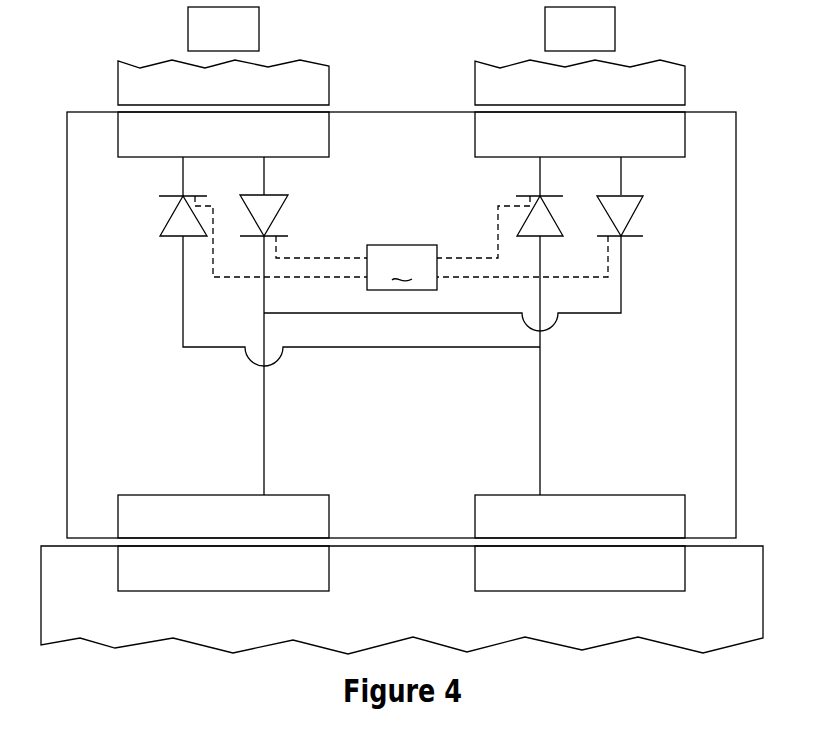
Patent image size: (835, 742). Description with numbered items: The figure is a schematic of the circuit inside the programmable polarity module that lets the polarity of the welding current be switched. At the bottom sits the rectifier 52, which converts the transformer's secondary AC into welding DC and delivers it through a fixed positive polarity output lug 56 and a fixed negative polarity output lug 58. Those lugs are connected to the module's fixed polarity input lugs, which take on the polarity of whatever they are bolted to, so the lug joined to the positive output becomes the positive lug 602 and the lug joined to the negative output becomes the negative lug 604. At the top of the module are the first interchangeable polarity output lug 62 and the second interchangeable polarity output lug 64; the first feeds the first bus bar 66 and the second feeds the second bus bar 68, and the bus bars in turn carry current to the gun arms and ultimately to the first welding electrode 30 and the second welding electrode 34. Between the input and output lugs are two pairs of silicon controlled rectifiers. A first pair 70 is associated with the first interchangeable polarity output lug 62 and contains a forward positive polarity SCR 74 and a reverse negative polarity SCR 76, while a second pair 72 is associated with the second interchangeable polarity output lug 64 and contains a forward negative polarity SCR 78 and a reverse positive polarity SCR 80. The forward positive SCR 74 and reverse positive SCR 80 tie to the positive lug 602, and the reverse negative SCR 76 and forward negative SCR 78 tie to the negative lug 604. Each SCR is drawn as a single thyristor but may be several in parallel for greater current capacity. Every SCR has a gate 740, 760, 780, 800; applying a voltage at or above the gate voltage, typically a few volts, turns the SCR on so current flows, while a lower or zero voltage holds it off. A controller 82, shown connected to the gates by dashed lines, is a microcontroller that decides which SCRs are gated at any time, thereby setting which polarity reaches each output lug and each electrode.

The first welding electrode 30 is at (605, 31).
The second welding electrode 34 is at (200, 32).
The rectifier 52 is at (100, 610).
The fixed positive polarity output lug 56 is at (667, 575).
The fixed negative polarity output lug 58 is at (138, 574).
The first interchangeable polarity output lug 62 is at (665, 137).
The second interchangeable polarity output lug 64 is at (137, 136).
The first bus bar 66 is at (665, 88).
The second bus bar 68 is at (138, 88).
The first pair of SCR's 70 is at (638, 250).
The second pair of SCR's 72 is at (165, 249).
The forward positive polarity SCR 74 is at (553, 215).
The reverse negative polarity SCR 76 is at (633, 215).
The forward negative polarity SCR 78 is at (277, 215).
The reverse positive polarity SCR 80 is at (168, 215).
The controller 82 is at (401, 243).
The positive lug 602 is at (667, 519).
The negative lug 604 is at (137, 518).
The gate 740 is at (528, 195).
The gate 760 is at (640, 235).
The gate 780 is at (283, 235).
The gate 800 is at (170, 195).